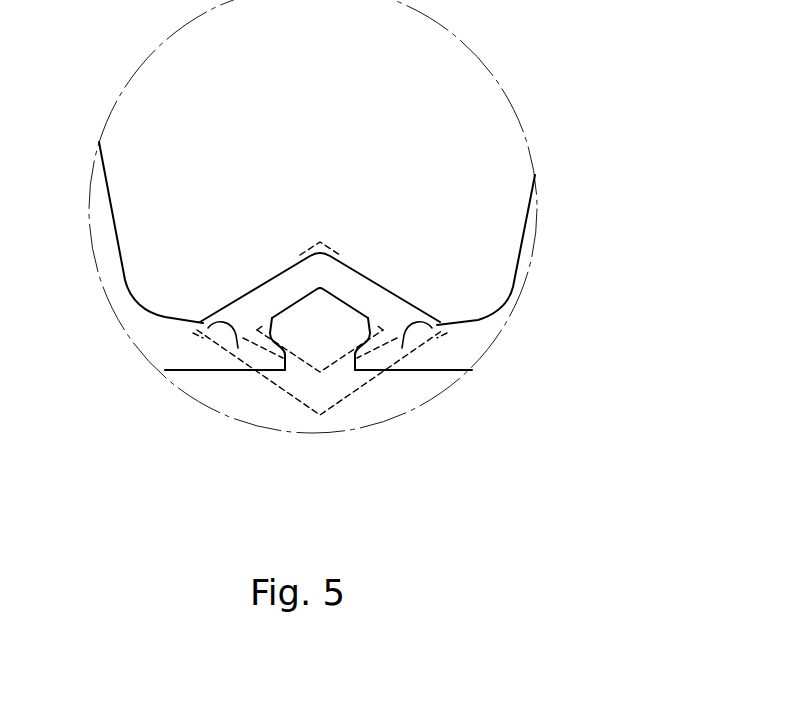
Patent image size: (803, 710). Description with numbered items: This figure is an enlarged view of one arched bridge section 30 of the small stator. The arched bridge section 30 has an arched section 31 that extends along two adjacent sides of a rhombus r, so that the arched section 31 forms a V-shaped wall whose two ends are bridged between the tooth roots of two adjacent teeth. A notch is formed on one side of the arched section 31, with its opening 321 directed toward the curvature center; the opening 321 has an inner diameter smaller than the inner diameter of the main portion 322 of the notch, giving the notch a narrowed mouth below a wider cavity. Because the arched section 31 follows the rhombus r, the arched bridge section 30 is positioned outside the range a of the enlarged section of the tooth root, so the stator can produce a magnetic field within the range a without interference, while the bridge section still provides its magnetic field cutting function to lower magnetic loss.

The arched bridge section 30 is at (407, 286).
The arched section 31 is at (358, 292).
The opening 321 is at (297, 362).
The main portion 322 is at (293, 327).
The range of the enlarged section of the tooth root a is at (207, 327).
The rhombus r is at (375, 382).